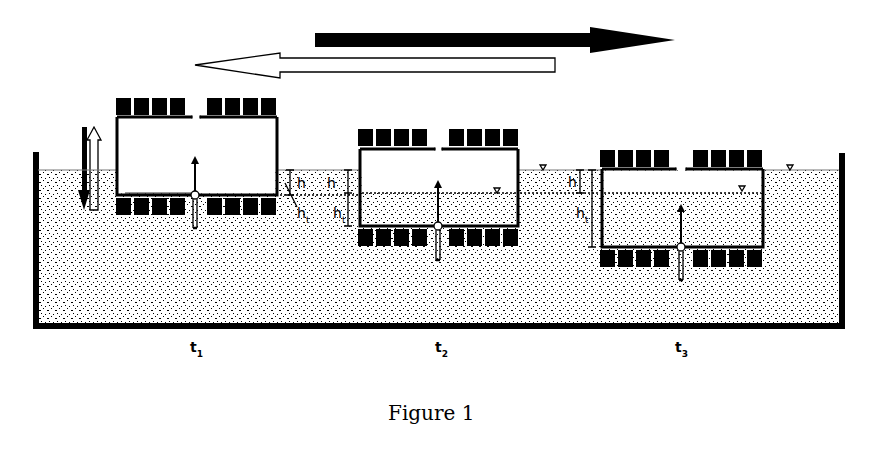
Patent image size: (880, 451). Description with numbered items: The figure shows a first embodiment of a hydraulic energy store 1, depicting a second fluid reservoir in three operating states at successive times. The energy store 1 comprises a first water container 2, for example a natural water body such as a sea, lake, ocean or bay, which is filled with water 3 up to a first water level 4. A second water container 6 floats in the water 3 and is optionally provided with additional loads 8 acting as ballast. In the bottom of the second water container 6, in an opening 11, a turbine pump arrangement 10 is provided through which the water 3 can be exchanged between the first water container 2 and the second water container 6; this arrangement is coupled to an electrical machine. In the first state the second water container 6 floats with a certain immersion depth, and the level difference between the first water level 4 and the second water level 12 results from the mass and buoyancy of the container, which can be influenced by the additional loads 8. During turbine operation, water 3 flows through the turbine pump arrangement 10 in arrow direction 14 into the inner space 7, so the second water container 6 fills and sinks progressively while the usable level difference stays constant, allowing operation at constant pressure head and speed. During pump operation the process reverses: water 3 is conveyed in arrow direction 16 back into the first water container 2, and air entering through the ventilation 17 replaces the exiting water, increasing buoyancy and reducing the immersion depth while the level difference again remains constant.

The hydraulic energy store 1 is at (70, 50).
The first water container 2 is at (147, 323).
The water 3 is at (438, 221).
The first water level 4 is at (549, 167).
The second water container 6 is at (115, 135).
The inner space 7 is at (257, 156).
The additional loads 8 is at (119, 98).
The turbine pump arrangement 10 is at (192, 193).
The opening 11 is at (190, 214).
The second water level 12 is at (127, 193).
The arrow direction 14 is at (199, 184).
The arrow direction 16 is at (198, 217).
The ventilation 17 is at (193, 115).